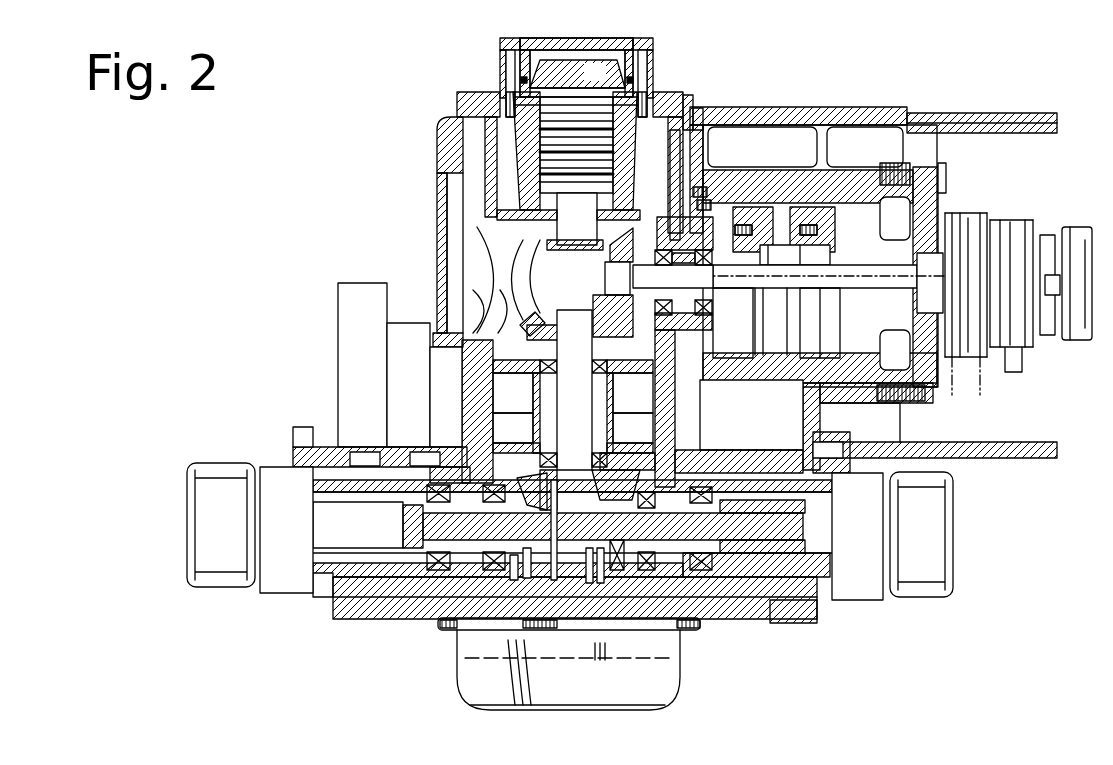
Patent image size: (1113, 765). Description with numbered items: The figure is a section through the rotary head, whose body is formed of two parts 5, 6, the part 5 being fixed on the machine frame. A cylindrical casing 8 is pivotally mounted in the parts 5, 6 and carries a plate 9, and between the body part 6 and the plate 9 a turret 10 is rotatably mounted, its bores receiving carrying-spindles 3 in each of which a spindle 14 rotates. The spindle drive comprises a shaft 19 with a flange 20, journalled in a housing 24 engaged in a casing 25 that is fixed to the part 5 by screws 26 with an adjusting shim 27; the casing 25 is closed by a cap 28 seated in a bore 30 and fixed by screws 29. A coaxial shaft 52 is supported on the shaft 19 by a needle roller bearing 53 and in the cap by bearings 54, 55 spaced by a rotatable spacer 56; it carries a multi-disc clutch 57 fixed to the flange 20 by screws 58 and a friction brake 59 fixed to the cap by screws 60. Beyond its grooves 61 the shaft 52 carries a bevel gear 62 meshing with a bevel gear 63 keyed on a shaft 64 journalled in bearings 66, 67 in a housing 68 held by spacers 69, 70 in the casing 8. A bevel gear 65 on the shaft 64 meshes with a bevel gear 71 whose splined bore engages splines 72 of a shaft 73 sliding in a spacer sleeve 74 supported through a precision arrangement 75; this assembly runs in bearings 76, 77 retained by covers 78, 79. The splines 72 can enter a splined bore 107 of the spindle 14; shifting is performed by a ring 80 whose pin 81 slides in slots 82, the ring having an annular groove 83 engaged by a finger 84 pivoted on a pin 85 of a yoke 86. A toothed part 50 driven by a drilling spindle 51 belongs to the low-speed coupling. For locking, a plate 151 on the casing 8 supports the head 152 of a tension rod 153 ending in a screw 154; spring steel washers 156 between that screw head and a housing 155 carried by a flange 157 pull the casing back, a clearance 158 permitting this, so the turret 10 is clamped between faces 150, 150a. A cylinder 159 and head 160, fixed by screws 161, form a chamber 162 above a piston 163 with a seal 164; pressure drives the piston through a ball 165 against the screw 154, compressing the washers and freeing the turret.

The carrying-spindle 3 is at (571, 533).
The body part 5 is at (868, 118).
The body part 6 is at (390, 386).
The cylindrical casing 8 is at (483, 343).
The plate 9 is at (810, 618).
The turret 10 is at (322, 597).
The spindle 14 is at (200, 527).
The shaft 19 is at (822, 283).
The flange 20 is at (852, 236).
The housing 24 is at (935, 200).
The casing 25 is at (800, 205).
The screws 26 is at (941, 176).
The adjusting shim 27 is at (912, 163).
The cap 28 is at (663, 211).
The screws 29 is at (708, 188).
The bore 30 is at (660, 175).
The toothed part 50 is at (1047, 330).
The drilling spindle 51 is at (1065, 330).
The shaft 52 is at (733, 323).
The needle roller bearing 53 is at (830, 268).
The bearing 54 is at (660, 300).
The bearing 55 is at (752, 321).
The rotatable spacer 56 is at (713, 278).
The electromagnetically-controlled clutch 57 is at (820, 323).
The screws 58 is at (850, 212).
The friction brake 59 is at (760, 215).
The screws 60 is at (708, 202).
The grooves 61 is at (620, 268).
The bevel gear 62 is at (625, 307).
The bevel gear 63 is at (545, 320).
The shaft 64 is at (573, 390).
The bevel gear 65 is at (632, 470).
The bearing 66 is at (543, 360).
The bearing 67 is at (630, 433).
The housing 68 is at (630, 413).
The spacer 69 is at (516, 433).
The spacer 70 is at (516, 413).
The bevel gear 71 is at (527, 560).
The splines 72 is at (470, 530).
The shaft 73 is at (735, 520).
The spacer sleeve 74 is at (553, 580).
The precision arrangement 75 is at (548, 500).
The bearing 76 is at (514, 565).
The bearing 77 is at (697, 577).
The cover 78 is at (478, 470).
The cover 79 is at (722, 478).
The ring 80 is at (680, 632).
The pin 81 is at (620, 530).
The slots 82 is at (555, 491).
The annular groove 83 is at (600, 487).
The finger 84 is at (622, 572).
The pin 85 is at (589, 585).
The yoke 86 is at (600, 585).
The splined bore 107 is at (435, 538).
The face 150 is at (751, 415).
The face 150a is at (775, 612).
The plate 151 is at (487, 210).
The head 152 is at (553, 247).
The tension rod 153 is at (579, 219).
The screw 154 is at (470, 100).
The housing 155 is at (527, 135).
The resilient spring steel washers 156 is at (642, 100).
The flange 157 is at (690, 108).
The clearance 158 is at (705, 128).
The cylinder 159 is at (500, 68).
The head 160 is at (500, 50).
The screws 161 is at (512, 40).
The chamber 162 is at (545, 47).
The piston 163 is at (590, 62).
The annular fluidtight seal 164 is at (522, 80).
The ball 165 is at (576, 97).